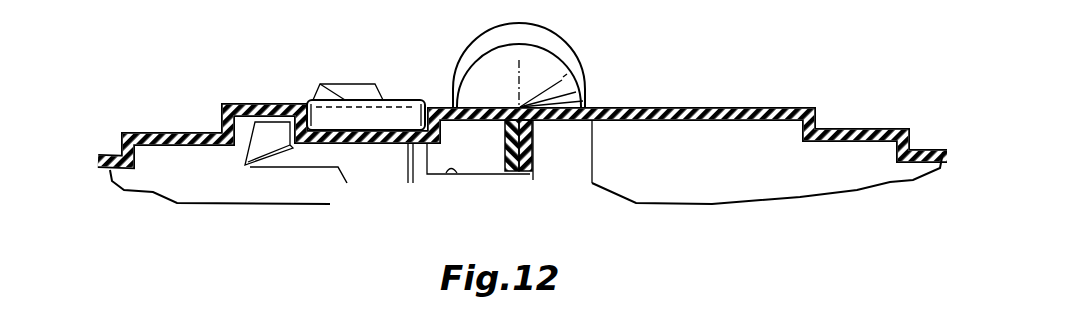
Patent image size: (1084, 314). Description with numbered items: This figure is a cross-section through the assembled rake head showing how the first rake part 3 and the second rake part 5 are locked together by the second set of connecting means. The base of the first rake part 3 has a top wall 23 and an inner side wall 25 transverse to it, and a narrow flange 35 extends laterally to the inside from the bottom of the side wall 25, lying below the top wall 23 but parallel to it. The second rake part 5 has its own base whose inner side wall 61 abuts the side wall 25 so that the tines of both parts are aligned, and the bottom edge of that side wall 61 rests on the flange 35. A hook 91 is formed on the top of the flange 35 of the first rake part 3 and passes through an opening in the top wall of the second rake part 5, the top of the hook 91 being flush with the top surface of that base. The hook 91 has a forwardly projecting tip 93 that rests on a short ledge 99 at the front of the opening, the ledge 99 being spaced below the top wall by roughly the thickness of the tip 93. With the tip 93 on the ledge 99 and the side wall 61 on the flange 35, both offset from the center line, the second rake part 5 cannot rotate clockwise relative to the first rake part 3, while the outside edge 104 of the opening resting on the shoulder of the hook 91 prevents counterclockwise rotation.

The first rake part 3 is at (764, 204).
The second rake part 5 is at (160, 206).
The top wall 23 is at (697, 109).
The inner side wall 25 is at (541, 148).
The flange 35 is at (450, 172).
The inner side wall 61 is at (495, 148).
The hook 91 is at (410, 88).
The tip 93 is at (379, 126).
The ledge 99 is at (358, 144).
The outside edge 104 is at (303, 100).